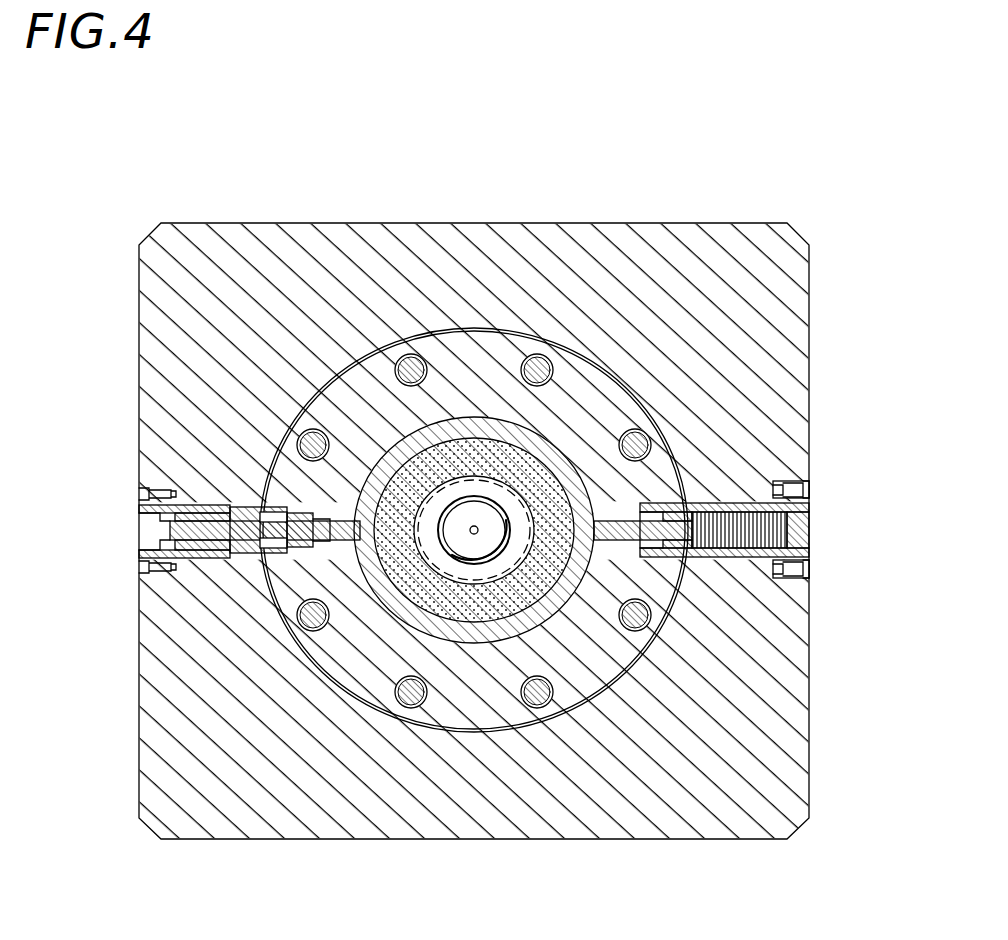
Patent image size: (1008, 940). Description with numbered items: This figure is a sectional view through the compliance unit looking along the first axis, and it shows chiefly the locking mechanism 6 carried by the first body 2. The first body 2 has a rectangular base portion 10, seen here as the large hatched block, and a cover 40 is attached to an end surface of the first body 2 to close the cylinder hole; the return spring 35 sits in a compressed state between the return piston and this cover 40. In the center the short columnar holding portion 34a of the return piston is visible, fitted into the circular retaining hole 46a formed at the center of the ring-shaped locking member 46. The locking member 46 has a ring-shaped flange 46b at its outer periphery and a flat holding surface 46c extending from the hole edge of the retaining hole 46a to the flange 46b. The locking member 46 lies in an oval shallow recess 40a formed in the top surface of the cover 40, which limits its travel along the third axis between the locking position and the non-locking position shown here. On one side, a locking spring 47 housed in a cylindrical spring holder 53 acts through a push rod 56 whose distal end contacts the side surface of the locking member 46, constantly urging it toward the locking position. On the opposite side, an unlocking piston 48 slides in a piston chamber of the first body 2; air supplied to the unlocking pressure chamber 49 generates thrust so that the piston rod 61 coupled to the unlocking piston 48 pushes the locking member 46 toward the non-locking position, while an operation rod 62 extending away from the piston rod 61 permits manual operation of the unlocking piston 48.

The first body 2 is at (617, 180).
The base portion 10 is at (387, 247).
The cover 40 is at (358, 402).
The recess 40a is at (304, 627).
The holding portion 34a is at (479, 480).
The locking mechanism 6 is at (561, 439).
The return spring 35 is at (440, 512).
The locking member 46 is at (392, 620).
The retaining hole 46a is at (447, 578).
The flange 46b is at (493, 632).
The holding surface 46c is at (520, 592).
The unlocking piston 48 is at (254, 505).
The operation rod 62 is at (165, 532).
The unlocking pressure chamber 49 is at (212, 553).
The piston rod 61 is at (360, 603).
The spring holder 53 is at (743, 503).
The locking spring 47 is at (785, 522).
The push rod 56 is at (682, 560).